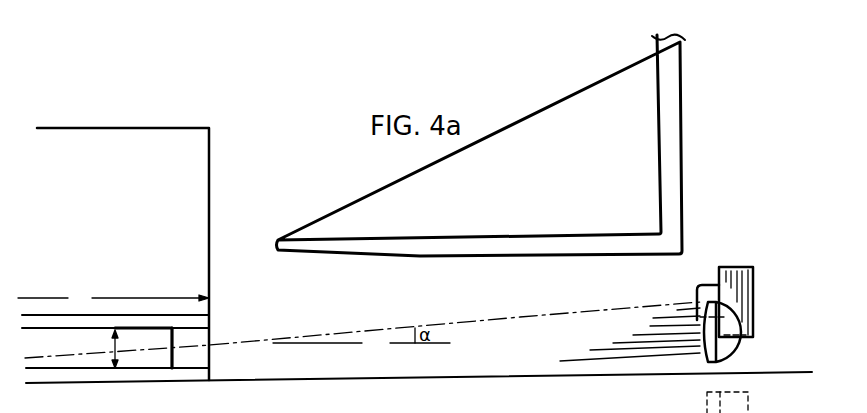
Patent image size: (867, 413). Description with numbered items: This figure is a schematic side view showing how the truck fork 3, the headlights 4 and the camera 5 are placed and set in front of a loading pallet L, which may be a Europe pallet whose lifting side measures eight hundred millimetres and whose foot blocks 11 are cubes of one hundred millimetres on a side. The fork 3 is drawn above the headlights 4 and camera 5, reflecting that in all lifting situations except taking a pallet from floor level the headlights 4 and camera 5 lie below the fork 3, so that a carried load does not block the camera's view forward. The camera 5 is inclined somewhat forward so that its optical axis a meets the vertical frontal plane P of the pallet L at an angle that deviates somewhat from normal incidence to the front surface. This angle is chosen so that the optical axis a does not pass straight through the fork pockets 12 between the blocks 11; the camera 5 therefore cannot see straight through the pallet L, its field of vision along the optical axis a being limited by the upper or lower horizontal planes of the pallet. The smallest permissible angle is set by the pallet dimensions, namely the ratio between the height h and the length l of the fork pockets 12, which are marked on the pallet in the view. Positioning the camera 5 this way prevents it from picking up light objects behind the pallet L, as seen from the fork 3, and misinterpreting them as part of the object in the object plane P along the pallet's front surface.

The truck fork 3 is at (417, 246).
The headlights 4 is at (732, 343).
The camera 5 is at (752, 296).
The foot blocks 11 is at (200, 357).
The fork pockets 12 is at (155, 362).
The vertical frontal plane P is at (210, 178).
The loading pallet L is at (219, 333).
The optical axis a is at (479, 318).
The height of the fork pockets h is at (124, 349).
The length of the fork pockets l is at (113, 296).